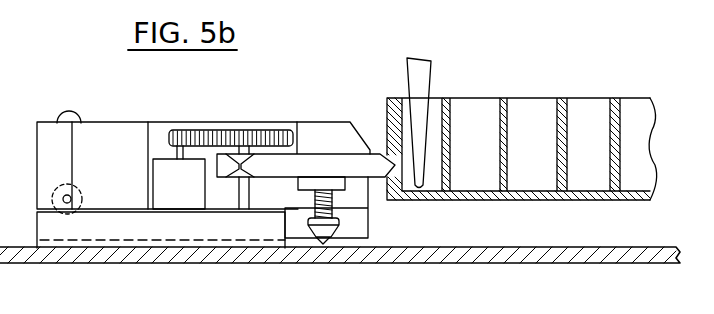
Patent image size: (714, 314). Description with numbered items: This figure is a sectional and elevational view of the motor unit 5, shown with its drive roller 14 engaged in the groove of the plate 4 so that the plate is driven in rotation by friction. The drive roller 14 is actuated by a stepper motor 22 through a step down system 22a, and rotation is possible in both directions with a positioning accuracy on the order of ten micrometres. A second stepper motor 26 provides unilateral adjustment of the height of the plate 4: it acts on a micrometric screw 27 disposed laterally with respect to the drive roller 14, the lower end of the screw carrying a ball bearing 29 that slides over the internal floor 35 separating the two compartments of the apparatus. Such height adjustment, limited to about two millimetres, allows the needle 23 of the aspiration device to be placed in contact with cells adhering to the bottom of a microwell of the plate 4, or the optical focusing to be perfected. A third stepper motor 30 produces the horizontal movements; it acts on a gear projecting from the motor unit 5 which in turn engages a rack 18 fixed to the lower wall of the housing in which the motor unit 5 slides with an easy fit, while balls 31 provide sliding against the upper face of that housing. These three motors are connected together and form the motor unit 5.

The motor unit 5 is at (43, 122).
The balls 31 is at (67, 111).
The stepper motor 30 is at (115, 143).
The step down system 22a is at (252, 137).
The stepper motor 22 is at (172, 192).
The stepper motor 26 is at (322, 137).
The micrometric screw 27 is at (305, 207).
The ball bearing 29 is at (325, 243).
The drive roller 14 is at (375, 172).
The rack 18 is at (63, 228).
The needle 23 is at (420, 73).
The plate 4 is at (503, 118).
The internal floor 35 is at (467, 256).